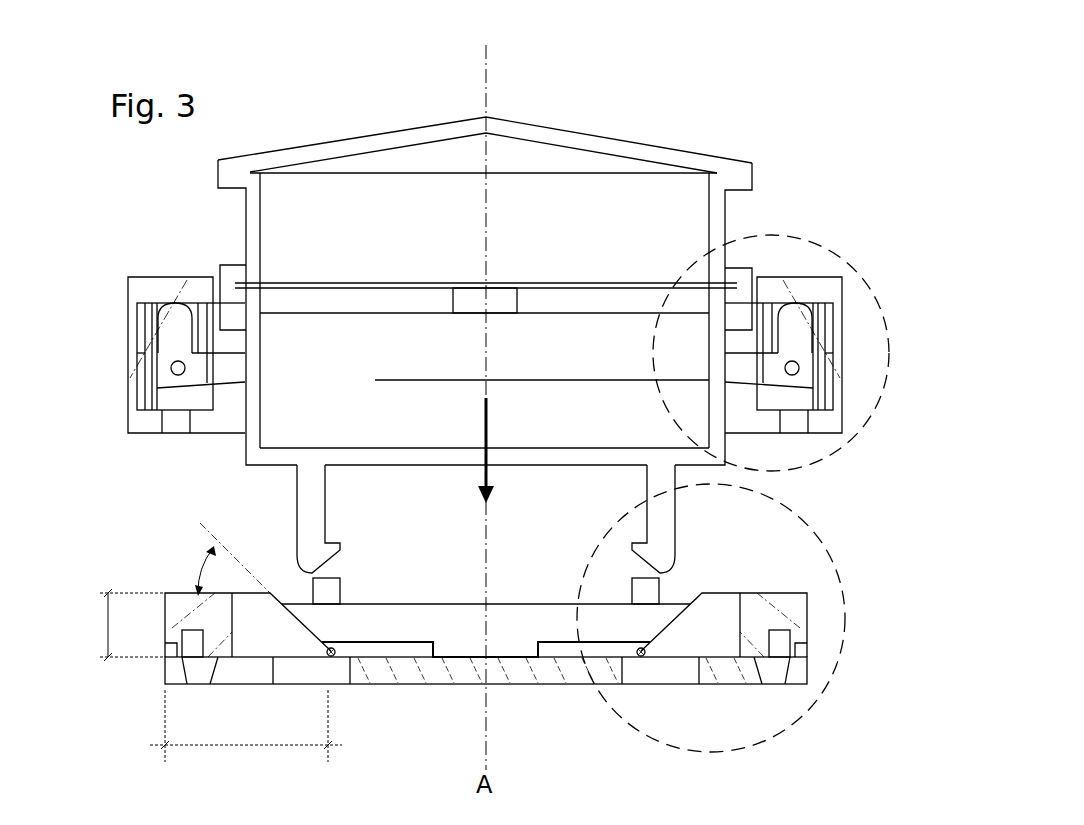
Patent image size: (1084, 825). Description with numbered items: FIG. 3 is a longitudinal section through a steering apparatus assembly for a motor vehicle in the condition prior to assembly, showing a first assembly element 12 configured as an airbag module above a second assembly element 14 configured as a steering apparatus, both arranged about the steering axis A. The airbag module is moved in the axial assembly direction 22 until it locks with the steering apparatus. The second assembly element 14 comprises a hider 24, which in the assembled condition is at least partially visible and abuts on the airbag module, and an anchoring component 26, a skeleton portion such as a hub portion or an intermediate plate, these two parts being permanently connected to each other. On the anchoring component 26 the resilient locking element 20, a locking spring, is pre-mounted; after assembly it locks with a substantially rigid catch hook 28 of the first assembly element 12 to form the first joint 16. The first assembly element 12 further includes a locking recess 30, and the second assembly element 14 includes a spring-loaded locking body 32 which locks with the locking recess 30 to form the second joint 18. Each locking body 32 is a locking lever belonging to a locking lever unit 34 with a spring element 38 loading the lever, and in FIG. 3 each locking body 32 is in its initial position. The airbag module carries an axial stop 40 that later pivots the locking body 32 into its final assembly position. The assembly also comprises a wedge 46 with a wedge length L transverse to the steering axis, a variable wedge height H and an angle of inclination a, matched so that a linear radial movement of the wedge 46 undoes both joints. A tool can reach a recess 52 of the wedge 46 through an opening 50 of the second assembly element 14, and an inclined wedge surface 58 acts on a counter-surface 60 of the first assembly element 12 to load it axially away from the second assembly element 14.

The first assembly element 12 is at (638, 102).
The second assembly element 14 is at (88, 731).
The first joint 16 is at (758, 750).
The second joint 18 is at (835, 455).
The resilient locking element 20 is at (331, 657).
The axial assembly direction 22 is at (494, 431).
The hider 24 is at (845, 240).
The anchoring component 26 is at (525, 675).
The catch hook 28 is at (330, 562).
The locking recess 30 is at (742, 208).
The locking body 32 is at (168, 335).
The locking lever unit 34 is at (142, 254).
The spring element 38 is at (815, 327).
The axial stop 40 is at (228, 295).
The wedge 46 is at (195, 610).
The opening 50 is at (775, 680).
The recess 52 is at (782, 640).
The inclined wedge surface 58 is at (328, 648).
The counter-surface 60 is at (315, 528).